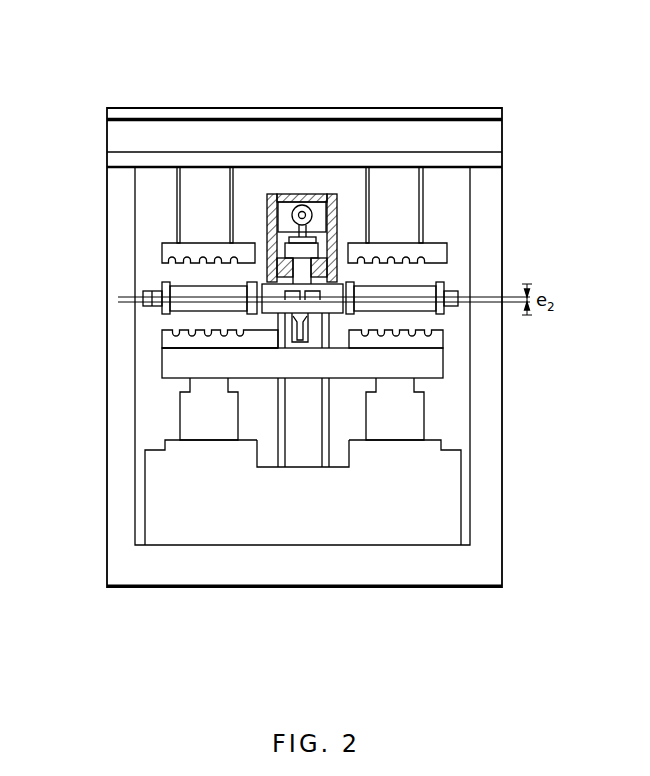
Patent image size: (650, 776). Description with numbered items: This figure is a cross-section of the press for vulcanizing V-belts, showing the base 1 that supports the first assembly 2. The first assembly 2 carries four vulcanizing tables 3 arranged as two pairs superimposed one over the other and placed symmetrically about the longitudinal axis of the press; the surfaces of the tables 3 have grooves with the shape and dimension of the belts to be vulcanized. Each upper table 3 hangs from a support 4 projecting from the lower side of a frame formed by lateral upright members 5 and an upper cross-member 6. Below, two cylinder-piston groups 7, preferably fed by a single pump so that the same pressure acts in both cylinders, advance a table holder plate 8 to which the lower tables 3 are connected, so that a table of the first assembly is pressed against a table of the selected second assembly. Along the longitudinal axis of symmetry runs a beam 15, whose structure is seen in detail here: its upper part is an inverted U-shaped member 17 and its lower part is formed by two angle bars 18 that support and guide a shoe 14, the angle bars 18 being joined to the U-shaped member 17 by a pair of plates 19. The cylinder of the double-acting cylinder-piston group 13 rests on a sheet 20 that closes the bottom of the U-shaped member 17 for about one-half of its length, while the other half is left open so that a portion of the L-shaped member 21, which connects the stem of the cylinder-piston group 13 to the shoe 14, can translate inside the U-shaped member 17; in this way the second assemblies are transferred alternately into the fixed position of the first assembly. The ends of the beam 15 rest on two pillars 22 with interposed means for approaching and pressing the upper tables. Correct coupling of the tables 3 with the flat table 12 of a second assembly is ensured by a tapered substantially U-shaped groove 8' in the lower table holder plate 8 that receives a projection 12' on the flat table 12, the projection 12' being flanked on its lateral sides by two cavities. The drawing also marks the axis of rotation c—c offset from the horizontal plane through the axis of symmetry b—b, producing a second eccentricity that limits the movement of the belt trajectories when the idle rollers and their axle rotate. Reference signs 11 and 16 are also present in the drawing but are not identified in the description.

The base 1 is at (357, 578).
The first assembly 2 is at (472, 98).
The vulcanizing tables 3 is at (210, 247).
The support 4 is at (197, 177).
The lateral upright members 5 is at (112, 289).
The upper cross-member 6 is at (222, 128).
The cylinder-piston groups 7 is at (205, 427).
The table holder plate 8 is at (248, 393).
The tapered substantially U-shaped groove 8' is at (172, 367).
The rack 11 is at (192, 305).
The flat table 12 is at (351, 269).
The projection 12' is at (429, 369).
The double-acting cylinder-piston group 13 is at (303, 205).
The shoe 14 is at (343, 225).
The beam 15 is at (288, 176).
The support 16 is at (376, 240).
The inverted U-shaped member 17 is at (320, 235).
The angle bars 18 is at (283, 268).
The pair of plates 19 is at (269, 193).
The sheet 20 is at (283, 232).
The L-shaped member 21 is at (268, 196).
The pillars 22 is at (305, 453).